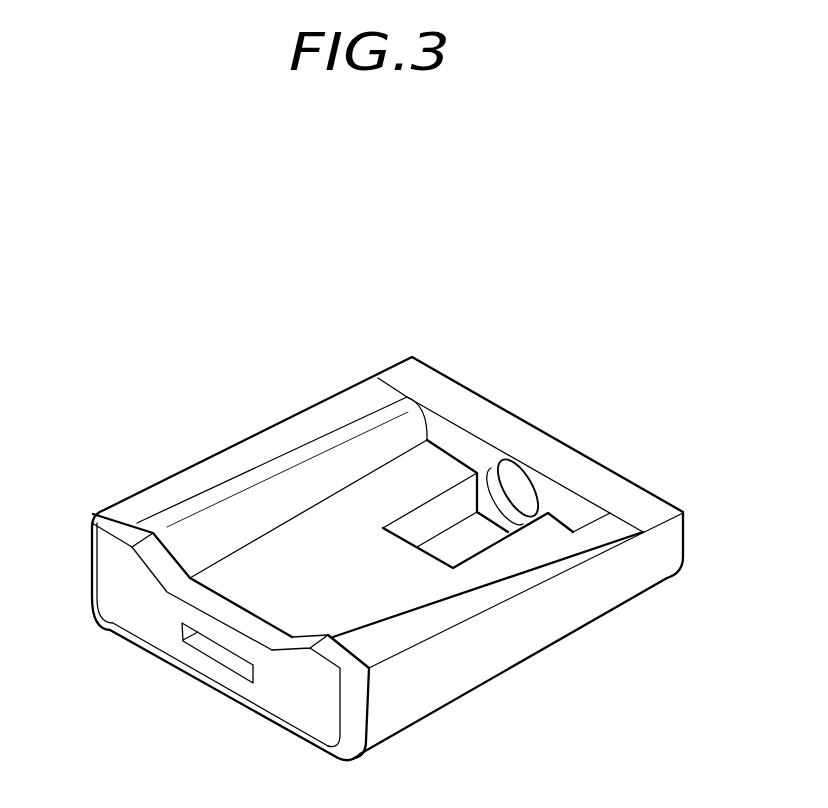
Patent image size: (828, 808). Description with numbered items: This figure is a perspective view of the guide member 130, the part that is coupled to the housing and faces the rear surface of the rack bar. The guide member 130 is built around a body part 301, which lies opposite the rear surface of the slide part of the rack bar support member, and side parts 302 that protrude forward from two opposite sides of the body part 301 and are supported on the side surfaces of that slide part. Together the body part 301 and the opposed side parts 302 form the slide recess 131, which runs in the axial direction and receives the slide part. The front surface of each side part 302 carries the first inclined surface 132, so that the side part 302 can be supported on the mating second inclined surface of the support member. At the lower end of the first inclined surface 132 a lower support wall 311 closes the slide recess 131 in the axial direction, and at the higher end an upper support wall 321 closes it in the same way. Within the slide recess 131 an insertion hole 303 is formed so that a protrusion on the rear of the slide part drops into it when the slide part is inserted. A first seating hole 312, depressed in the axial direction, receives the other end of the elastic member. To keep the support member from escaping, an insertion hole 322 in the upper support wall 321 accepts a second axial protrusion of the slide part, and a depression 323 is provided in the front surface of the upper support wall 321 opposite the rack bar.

The guide member 130 is at (153, 401).
The slide recess 131 is at (237, 520).
The first inclined surface 132 is at (508, 583).
The body part 301 is at (343, 520).
The side parts 302 is at (480, 663).
The insertion hole 303 is at (446, 548).
The lower support wall 311 is at (570, 470).
The first seating hole 312 is at (521, 498).
The upper support wall 321 is at (137, 612).
The insertion hole 322 is at (228, 656).
The depression 323 is at (195, 597).